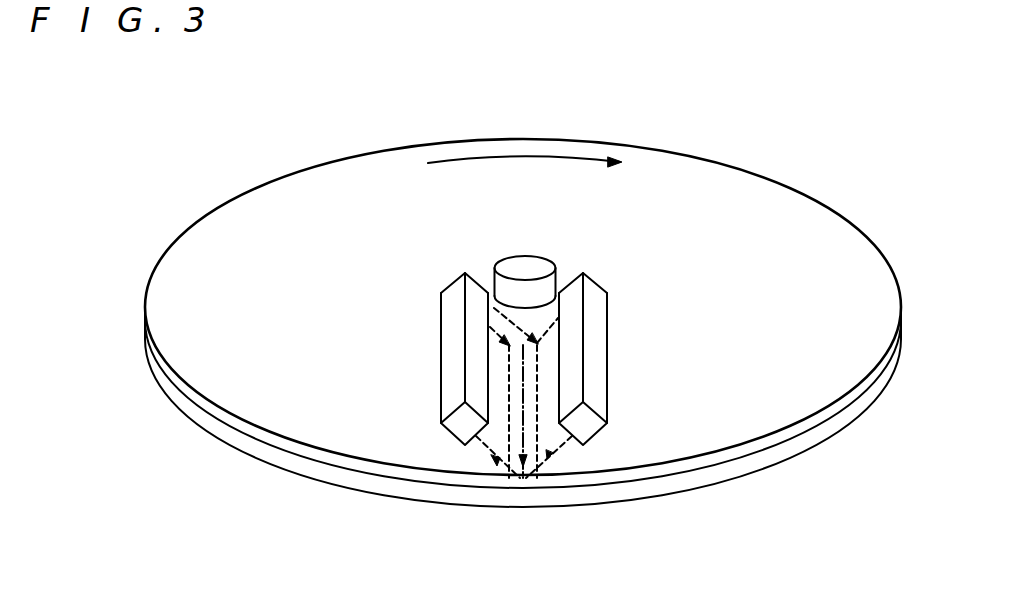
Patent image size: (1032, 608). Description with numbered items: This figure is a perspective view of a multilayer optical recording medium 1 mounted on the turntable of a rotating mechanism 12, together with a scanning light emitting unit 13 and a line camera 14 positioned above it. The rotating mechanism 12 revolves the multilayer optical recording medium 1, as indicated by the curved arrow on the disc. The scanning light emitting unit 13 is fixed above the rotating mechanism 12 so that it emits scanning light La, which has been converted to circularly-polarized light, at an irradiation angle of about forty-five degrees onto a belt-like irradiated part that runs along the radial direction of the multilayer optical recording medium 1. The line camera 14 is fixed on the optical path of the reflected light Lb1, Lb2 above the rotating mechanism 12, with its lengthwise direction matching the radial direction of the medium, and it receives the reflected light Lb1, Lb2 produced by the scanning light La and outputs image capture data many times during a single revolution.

The multilayer optical recording medium 1 is at (735, 200).
The rotating mechanism 12 is at (203, 418).
The scanning light emitting unit 13 is at (453, 397).
The line camera 14 is at (597, 394).
The scanning light La is at (495, 462).
The reflected light Lb1 is at (540, 458).
The reflected light Lb2 is at (514, 327).